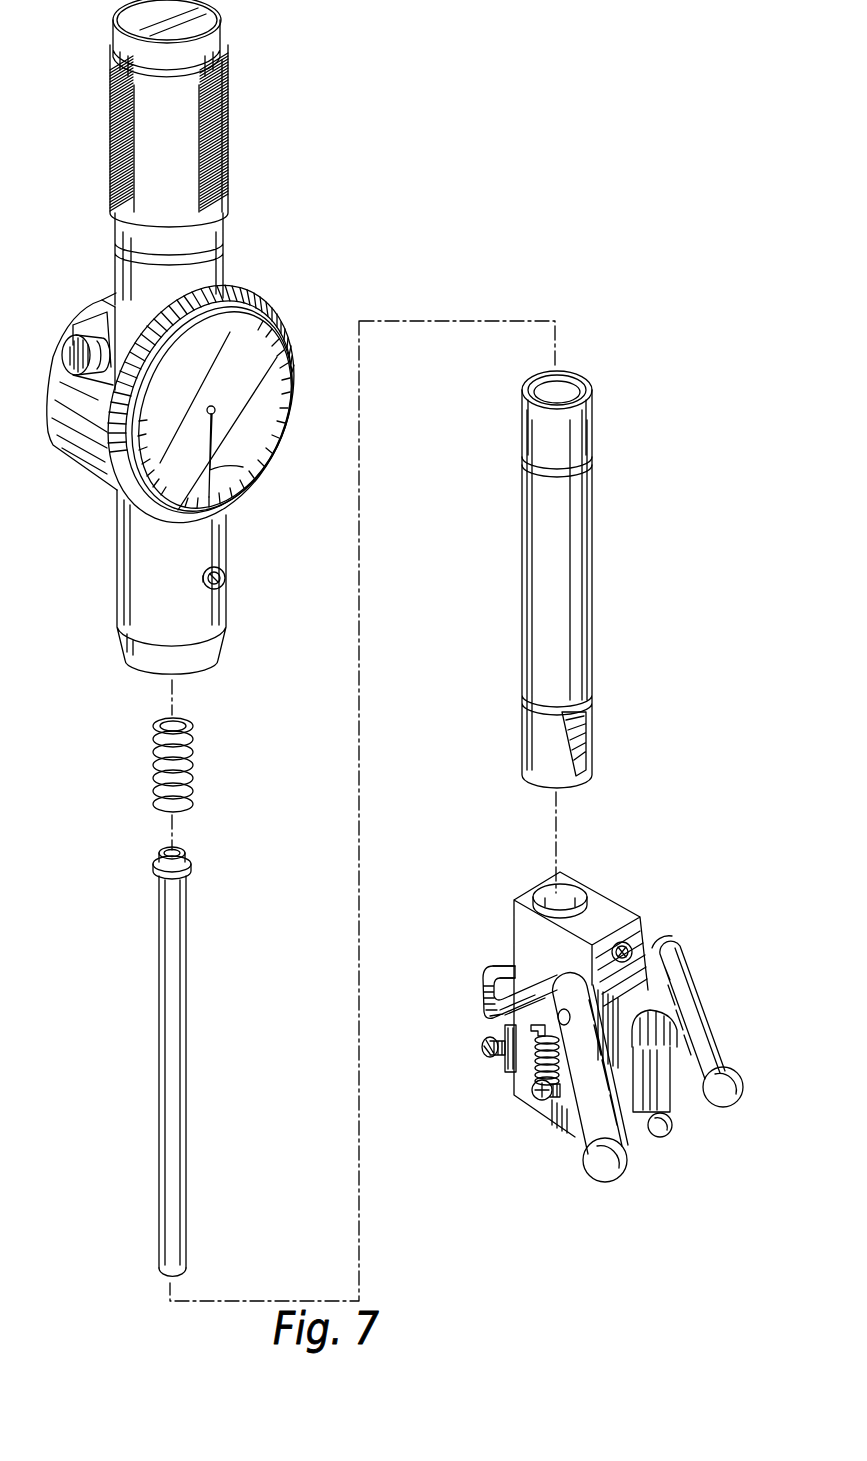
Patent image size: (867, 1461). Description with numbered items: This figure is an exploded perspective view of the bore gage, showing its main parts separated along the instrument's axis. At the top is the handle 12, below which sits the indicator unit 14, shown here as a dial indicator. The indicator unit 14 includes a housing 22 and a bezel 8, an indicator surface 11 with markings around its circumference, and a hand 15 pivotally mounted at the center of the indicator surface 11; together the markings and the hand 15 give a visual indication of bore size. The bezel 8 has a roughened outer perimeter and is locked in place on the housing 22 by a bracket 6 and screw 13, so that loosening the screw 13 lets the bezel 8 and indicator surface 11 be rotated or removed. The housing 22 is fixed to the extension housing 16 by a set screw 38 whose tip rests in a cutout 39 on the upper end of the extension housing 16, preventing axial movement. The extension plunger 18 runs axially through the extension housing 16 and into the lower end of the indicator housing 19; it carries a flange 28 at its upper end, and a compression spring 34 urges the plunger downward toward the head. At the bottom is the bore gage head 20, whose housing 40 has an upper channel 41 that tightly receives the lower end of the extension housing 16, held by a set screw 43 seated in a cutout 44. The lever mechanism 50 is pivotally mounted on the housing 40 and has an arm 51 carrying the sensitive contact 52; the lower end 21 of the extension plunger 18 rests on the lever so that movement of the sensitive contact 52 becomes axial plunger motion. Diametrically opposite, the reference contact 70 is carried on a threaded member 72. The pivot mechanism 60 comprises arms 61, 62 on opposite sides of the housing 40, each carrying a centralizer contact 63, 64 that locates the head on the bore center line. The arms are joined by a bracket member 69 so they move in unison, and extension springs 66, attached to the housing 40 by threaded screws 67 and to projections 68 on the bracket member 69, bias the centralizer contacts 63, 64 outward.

The bracket 6 is at (102, 300).
The bezel 8 is at (247, 310).
The indicator surface 11 is at (258, 354).
The handle 12 is at (227, 126).
The screw 13 is at (68, 350).
The indicator unit 14 is at (294, 317).
The hand 15 is at (243, 467).
The extension housing 16 is at (592, 600).
The extension plunger 18 is at (158, 1025).
The indicator housing 19 is at (52, 388).
The bore gage head 20 is at (658, 876).
The lower end 21 is at (160, 1270).
The housing 22 is at (118, 586).
The flange 28 is at (195, 862).
The compression spring 34 is at (197, 767).
The set screw 38 is at (226, 580).
The cutout 39 is at (592, 440).
The housing 40 is at (512, 900).
The upper channel 41 is at (568, 884).
The set screw 43 is at (635, 940).
The cutout 44 is at (575, 730).
The lever mechanism 50 is at (653, 1010).
The arm 51 is at (665, 1097).
The sensitive contact 52 is at (667, 1132).
The pivot mechanism 60 is at (467, 983).
The arm 61 is at (705, 1010).
The arm 62 is at (580, 1100).
The centralizer contact 63 is at (728, 1072).
The centralizer contact 64 is at (600, 1162).
The extension spring 66 is at (537, 1062).
The threaded screw 67 is at (538, 1098).
The projection 68 is at (530, 1026).
The bracket member 69 is at (503, 966).
The reference contact 70 is at (483, 1050).
The threaded member 72 is at (505, 1060).